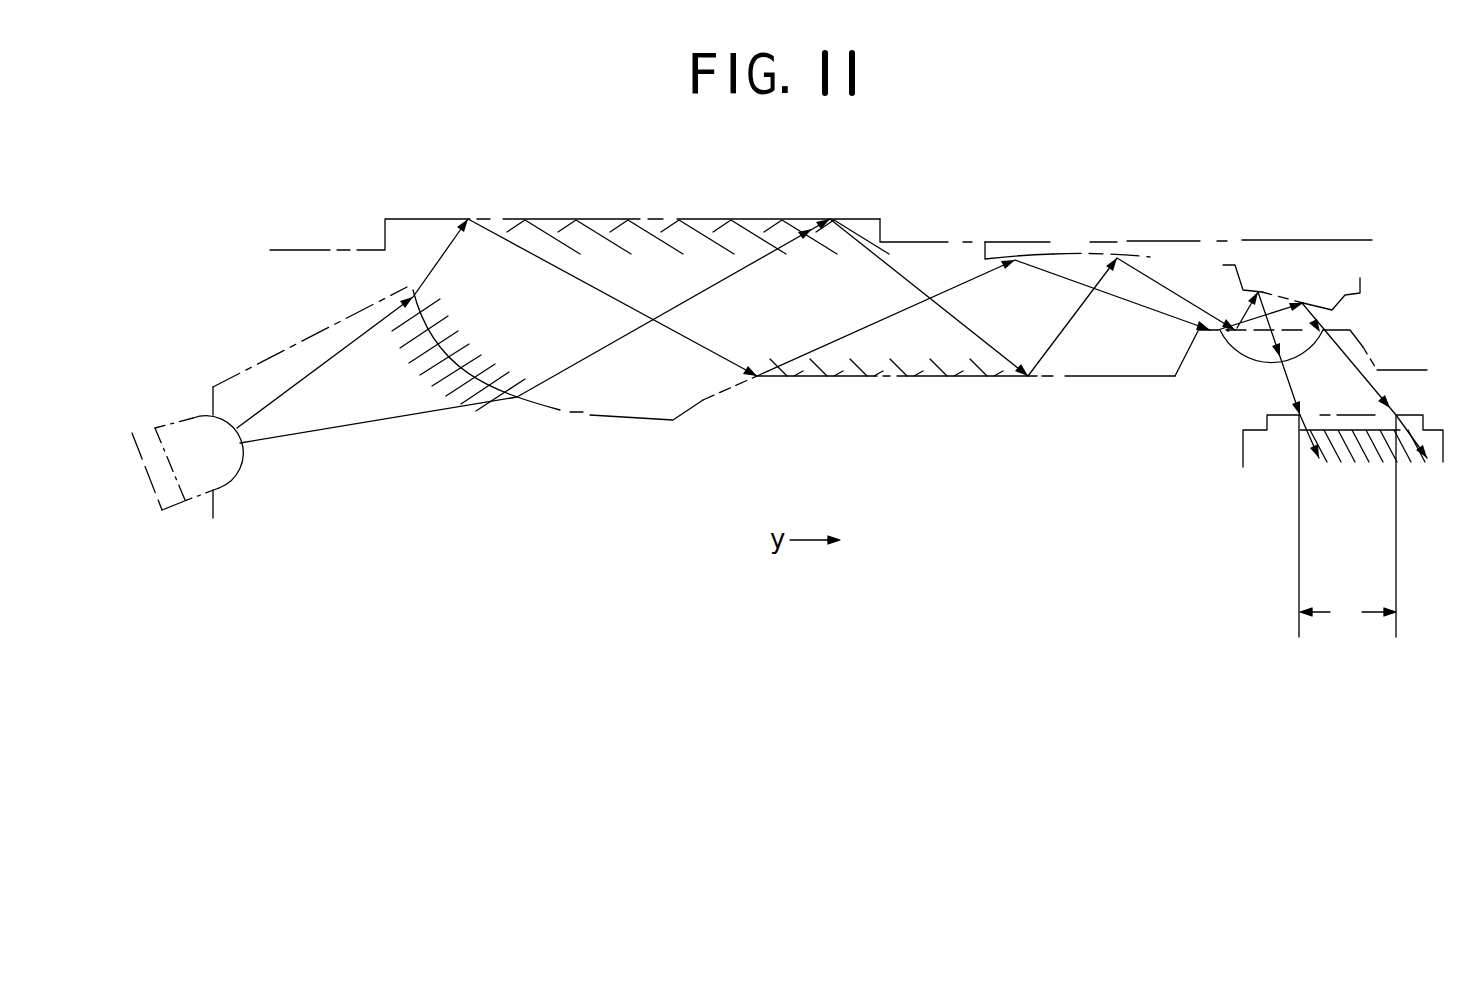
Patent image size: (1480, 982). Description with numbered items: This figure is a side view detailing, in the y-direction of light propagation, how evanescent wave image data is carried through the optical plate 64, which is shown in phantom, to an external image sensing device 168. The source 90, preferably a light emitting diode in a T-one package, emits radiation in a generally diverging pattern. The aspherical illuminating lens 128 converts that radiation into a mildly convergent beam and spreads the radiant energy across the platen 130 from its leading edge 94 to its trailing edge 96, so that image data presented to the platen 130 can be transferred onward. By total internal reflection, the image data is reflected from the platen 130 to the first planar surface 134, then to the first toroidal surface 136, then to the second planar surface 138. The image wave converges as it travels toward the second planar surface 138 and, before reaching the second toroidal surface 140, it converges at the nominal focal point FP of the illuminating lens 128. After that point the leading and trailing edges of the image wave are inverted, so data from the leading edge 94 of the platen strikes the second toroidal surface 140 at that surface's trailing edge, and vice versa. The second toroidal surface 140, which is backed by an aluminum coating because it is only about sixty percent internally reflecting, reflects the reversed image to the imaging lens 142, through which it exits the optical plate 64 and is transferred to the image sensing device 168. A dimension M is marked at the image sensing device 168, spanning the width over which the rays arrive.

The source 90 is at (236, 449).
The leading edge 94 is at (387, 233).
The trailing edge 96 is at (883, 229).
The optical plate 64 is at (957, 258).
The illuminating lens 128 is at (558, 410).
The platen 130 is at (423, 233).
The first planar surface 134 is at (855, 377).
The first toroidal surface 136 is at (1058, 254).
The second planar surface 138 is at (1206, 333).
The second toroidal surface 140 is at (1224, 266).
The imaging lens 142 is at (1262, 348).
The image sensing device 168 is at (1255, 447).
The nominal focal point FP is at (1242, 313).
The dimension M is at (1348, 613).